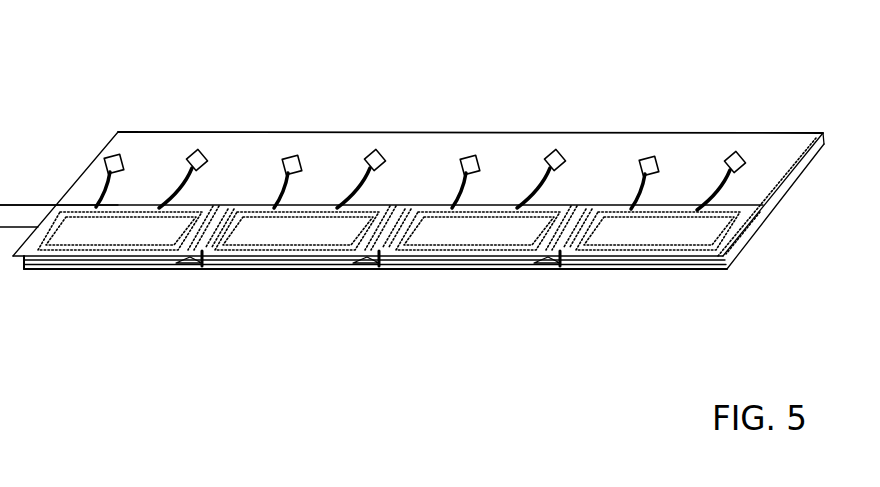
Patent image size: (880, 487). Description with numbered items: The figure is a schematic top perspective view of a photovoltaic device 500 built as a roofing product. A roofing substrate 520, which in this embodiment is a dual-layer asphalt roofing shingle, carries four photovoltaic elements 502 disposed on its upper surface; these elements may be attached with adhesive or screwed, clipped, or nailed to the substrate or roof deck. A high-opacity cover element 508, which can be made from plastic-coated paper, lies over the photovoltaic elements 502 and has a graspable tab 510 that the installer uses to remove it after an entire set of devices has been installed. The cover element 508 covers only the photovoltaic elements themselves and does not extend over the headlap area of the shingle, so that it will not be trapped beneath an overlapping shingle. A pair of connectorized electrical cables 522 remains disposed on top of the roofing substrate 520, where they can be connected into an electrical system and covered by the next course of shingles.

The photovoltaic device 500 is at (752, 36).
The photovoltaic elements 502 is at (472, 247).
The cover element 508 is at (560, 251).
The graspable tab 510 is at (23, 215).
The roofing substrate 520 is at (455, 142).
The connectorized electrical cables 522 is at (186, 183).